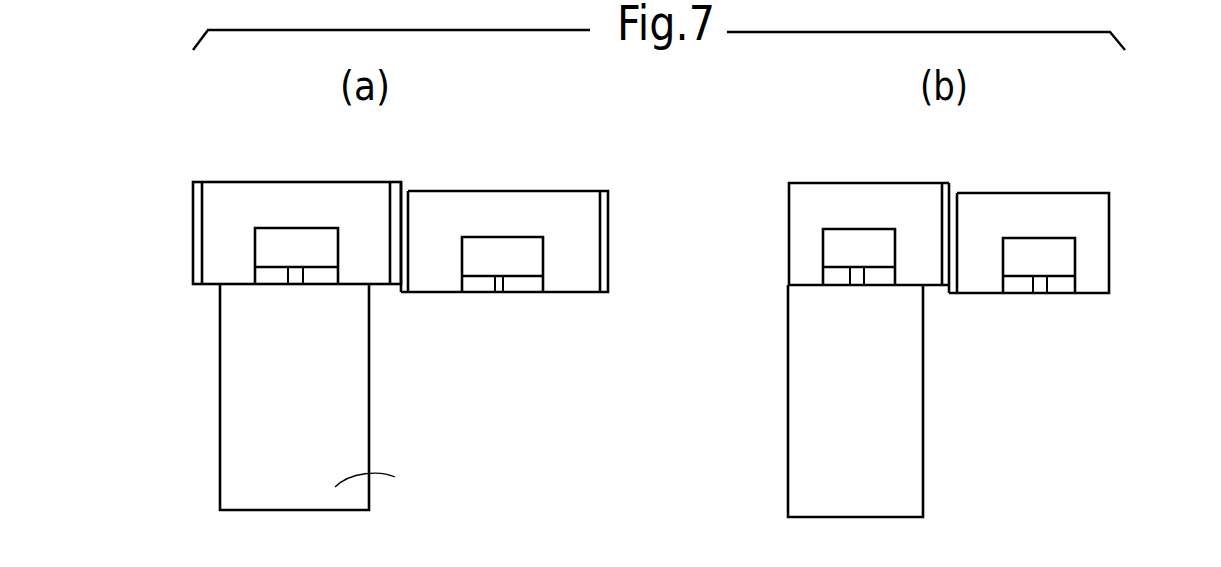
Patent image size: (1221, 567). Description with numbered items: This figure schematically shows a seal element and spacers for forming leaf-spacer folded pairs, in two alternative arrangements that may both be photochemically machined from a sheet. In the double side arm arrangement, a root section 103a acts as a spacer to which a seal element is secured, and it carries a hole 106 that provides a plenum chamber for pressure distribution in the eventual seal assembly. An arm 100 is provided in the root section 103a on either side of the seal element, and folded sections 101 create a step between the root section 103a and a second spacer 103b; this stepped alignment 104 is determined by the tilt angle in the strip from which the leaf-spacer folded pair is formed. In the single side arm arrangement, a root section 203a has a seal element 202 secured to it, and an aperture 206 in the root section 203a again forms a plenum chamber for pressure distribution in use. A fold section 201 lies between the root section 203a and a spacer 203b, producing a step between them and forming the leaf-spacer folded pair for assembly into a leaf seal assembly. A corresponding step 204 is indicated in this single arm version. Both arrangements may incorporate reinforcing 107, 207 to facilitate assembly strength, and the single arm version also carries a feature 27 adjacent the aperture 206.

The arm 100 is at (208, 192).
The folded sections 101 is at (401, 218).
The root section 103a is at (223, 268).
The spacer 103b is at (575, 282).
The stepped alignment 104 is at (402, 302).
The hole 106 is at (272, 246).
The reinforcing 107 is at (297, 284).
The fold section 201 is at (945, 220).
The seal element 202 is at (900, 465).
The root section 203a is at (815, 205).
The spacer 203b is at (1092, 208).
The gap between chambers 204 is at (945, 292).
The aperture 206 is at (852, 255).
The reinforcing 207 is at (858, 287).
The terminal 27 is at (1040, 293).